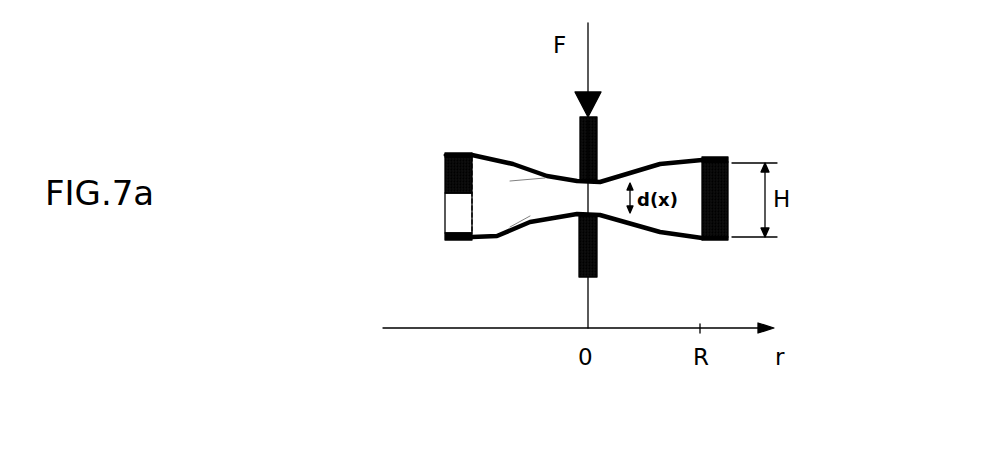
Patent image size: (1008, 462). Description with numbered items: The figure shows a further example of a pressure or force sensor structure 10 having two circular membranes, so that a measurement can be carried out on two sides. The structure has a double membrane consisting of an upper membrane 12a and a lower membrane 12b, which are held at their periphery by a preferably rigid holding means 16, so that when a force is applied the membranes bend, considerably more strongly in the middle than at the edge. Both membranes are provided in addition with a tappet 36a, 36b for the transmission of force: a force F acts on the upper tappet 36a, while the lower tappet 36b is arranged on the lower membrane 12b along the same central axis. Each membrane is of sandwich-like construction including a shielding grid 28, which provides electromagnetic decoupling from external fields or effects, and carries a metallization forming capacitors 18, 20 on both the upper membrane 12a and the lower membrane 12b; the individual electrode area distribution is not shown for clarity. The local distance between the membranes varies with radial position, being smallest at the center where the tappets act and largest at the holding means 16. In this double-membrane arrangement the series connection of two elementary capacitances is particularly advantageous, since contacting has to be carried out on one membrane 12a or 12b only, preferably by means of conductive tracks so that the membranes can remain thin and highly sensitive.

The pressure or force sensor structure 10 is at (735, 104).
The upper membrane 12a is at (669, 160).
The lower membrane 12b is at (667, 236).
The holding means 16 is at (445, 217).
The capacitor 18 is at (545, 178).
The capacitor 20 is at (530, 216).
The shielding grid 28 is at (445, 156).
The tappet 36a is at (578, 147).
The tappet 36b is at (578, 250).